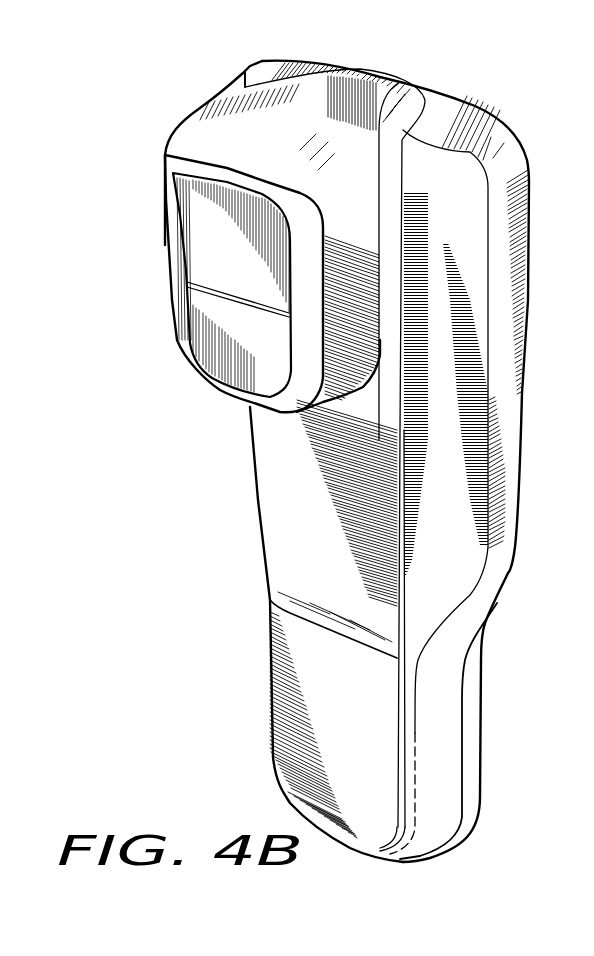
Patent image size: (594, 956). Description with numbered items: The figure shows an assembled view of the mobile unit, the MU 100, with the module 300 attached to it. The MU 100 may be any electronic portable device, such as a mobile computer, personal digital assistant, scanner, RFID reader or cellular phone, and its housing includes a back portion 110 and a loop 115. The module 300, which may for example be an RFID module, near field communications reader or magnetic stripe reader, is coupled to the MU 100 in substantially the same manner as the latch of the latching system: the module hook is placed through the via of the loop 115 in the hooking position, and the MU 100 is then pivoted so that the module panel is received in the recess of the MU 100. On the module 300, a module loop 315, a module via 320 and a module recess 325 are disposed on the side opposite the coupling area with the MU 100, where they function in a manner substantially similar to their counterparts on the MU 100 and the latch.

The MU 100 is at (518, 135).
The back portion 110 is at (322, 670).
The loop 115 is at (337, 73).
The module 300 is at (163, 103).
The module loop 315 is at (163, 166).
The module via 320 is at (203, 188).
The module recess 325 is at (217, 258).